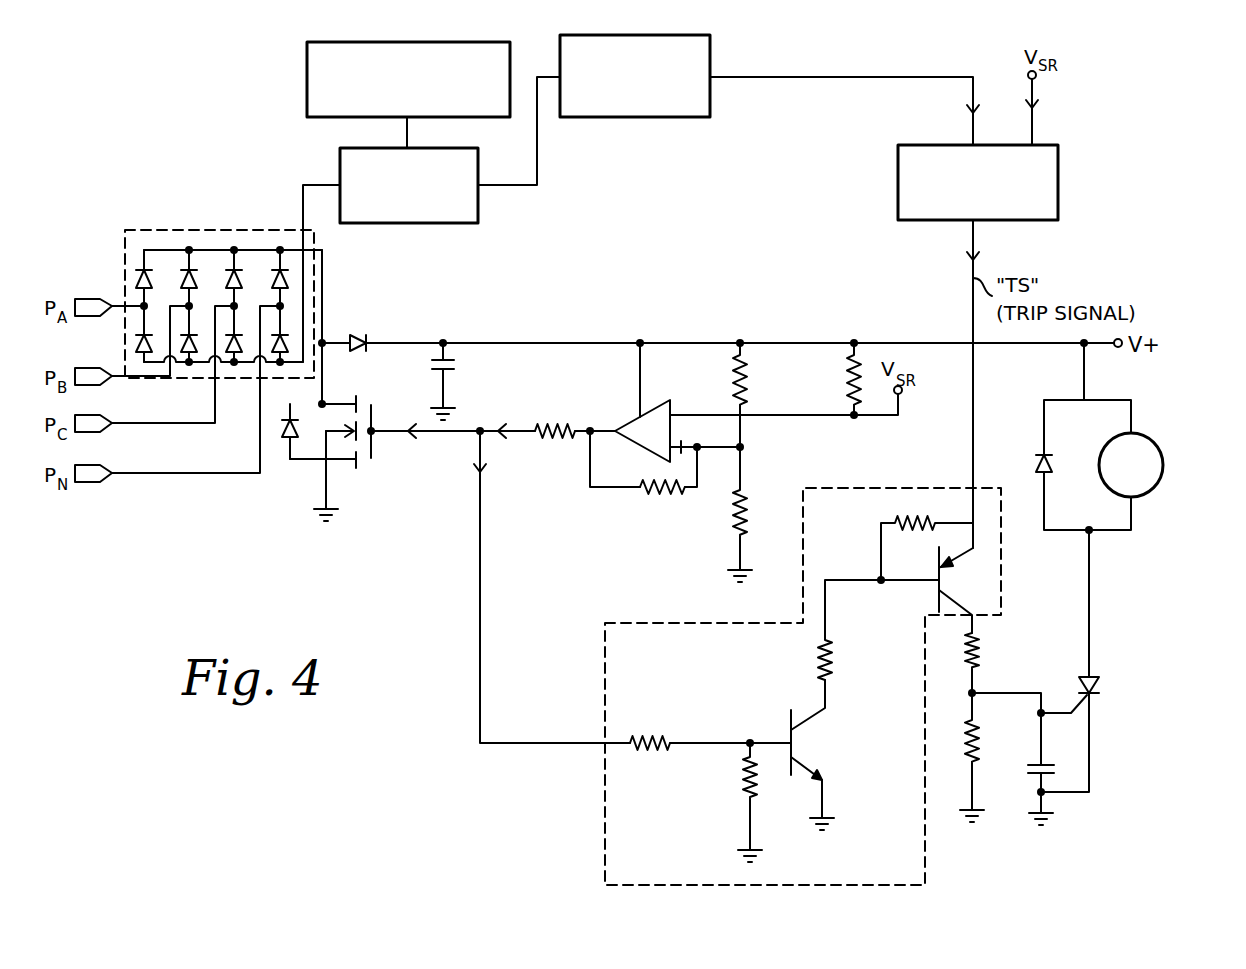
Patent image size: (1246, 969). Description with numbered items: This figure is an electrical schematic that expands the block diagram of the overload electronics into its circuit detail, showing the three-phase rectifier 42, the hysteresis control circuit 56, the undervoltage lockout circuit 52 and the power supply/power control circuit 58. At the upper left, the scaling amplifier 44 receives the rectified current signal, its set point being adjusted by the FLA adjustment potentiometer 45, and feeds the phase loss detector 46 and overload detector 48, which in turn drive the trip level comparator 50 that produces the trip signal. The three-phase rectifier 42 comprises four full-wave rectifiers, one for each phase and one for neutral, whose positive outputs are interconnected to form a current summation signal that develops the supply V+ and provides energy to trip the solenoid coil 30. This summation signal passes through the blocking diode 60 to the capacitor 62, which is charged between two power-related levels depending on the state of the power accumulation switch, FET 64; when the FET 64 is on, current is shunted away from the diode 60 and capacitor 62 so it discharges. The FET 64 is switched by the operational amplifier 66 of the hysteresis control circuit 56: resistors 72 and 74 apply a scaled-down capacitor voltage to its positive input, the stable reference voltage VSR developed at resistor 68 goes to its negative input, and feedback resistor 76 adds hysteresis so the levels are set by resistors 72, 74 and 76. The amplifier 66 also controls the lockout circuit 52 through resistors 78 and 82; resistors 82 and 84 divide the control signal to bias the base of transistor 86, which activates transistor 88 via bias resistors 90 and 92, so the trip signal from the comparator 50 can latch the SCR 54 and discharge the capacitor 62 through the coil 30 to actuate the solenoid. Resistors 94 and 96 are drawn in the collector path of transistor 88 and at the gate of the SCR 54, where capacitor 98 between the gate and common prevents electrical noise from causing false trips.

The solenoid coil 30 is at (1162, 478).
The three-phase rectifier 42 is at (192, 231).
The scaling amplifier 44 is at (430, 224).
The FLA adjustment potentiometer 45 is at (306, 77).
The phase loss detector 46 is at (660, 118).
The overload detector 48 is at (637, 104).
The trip level comparator 50 is at (1058, 186).
The undervoltage lockout circuit 52 is at (605, 806).
The SCR 54 is at (1100, 690).
The hysteresis control circuit 56 is at (630, 474).
The power supply/power control circuit 58 is at (347, 444).
The blocking diode 60 is at (354, 336).
The capacitor 62 is at (456, 362).
The FET 64 is at (365, 463).
The operational amplifier 66 is at (643, 407).
The resistor 68 is at (846, 384).
The resistor 72 is at (731, 383).
The resistor 74 is at (750, 515).
The resistor 76 is at (655, 491).
The resistor 78 is at (545, 428).
The resistor 82 is at (656, 736).
The resistor 84 is at (745, 778).
The transistor 86 is at (813, 747).
The transistor 88 is at (942, 584).
The bias resistor 90 is at (840, 660).
The bias resistor 92 is at (917, 525).
The resistor 94 is at (984, 657).
The resistor 96 is at (981, 752).
The capacitor 98 is at (1044, 764).